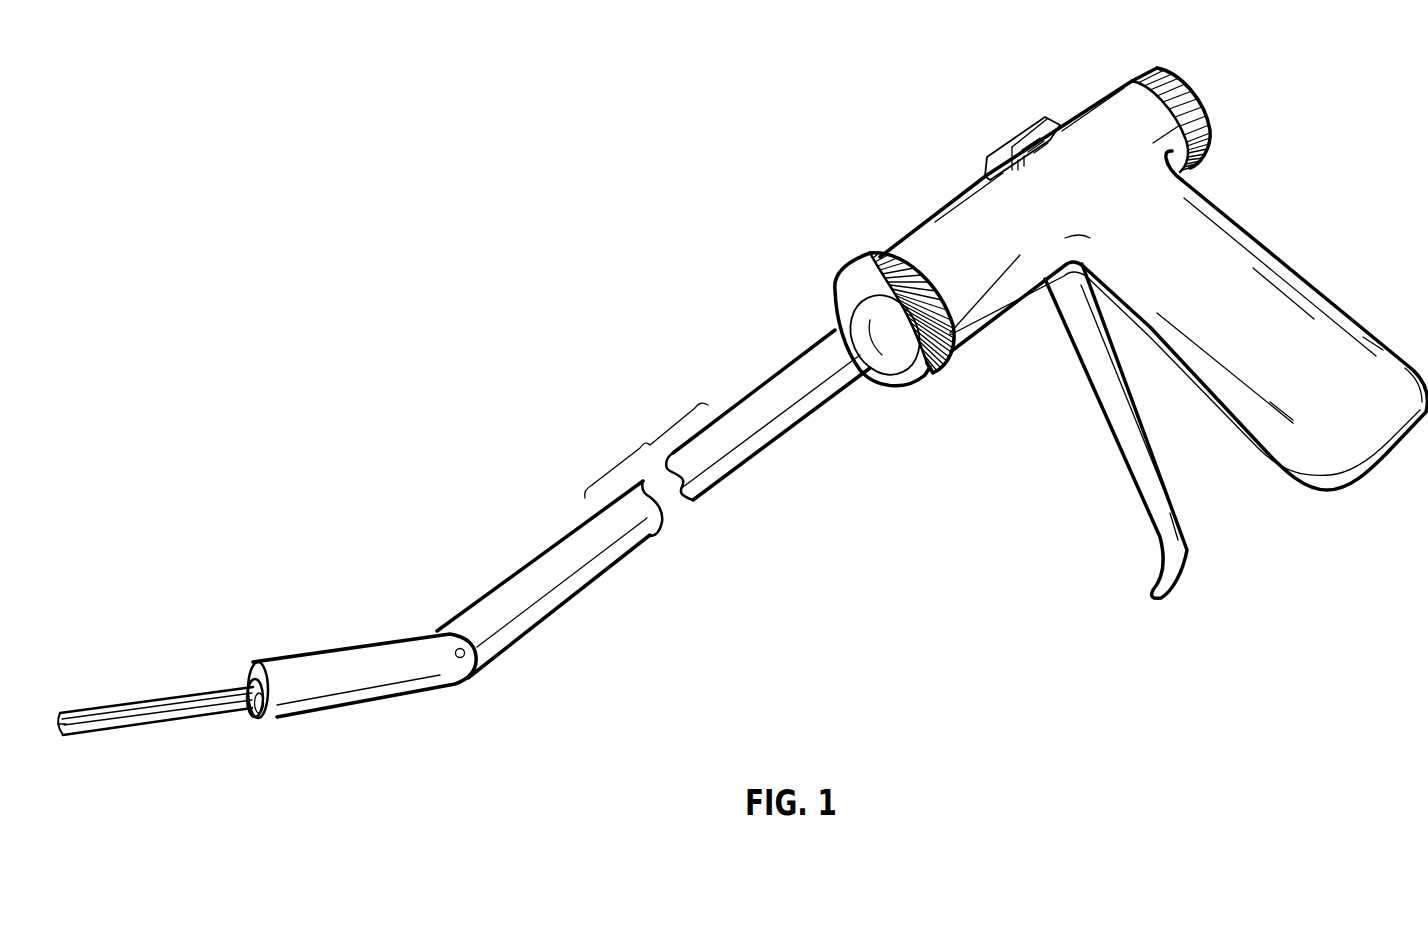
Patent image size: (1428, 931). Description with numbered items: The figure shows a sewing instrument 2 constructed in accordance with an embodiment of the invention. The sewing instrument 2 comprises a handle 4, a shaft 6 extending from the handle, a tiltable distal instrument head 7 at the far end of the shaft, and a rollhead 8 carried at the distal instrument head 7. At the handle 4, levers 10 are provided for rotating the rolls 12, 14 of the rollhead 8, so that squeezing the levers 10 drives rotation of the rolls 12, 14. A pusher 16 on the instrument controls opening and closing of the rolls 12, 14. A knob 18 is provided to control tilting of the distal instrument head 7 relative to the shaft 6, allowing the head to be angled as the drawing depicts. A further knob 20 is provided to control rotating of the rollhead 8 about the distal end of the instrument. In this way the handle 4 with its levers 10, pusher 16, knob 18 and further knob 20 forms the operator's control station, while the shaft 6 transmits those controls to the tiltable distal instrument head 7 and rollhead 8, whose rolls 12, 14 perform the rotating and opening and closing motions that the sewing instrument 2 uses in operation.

The sewing instrument 2 is at (633, 317).
The handle 4 is at (1268, 278).
The shaft 6 is at (752, 448).
The tiltable distal instrument head 7 is at (388, 648).
The rollhead 8 is at (268, 703).
The levers 10 is at (1182, 553).
The roll 12 is at (142, 698).
The roll 14 is at (163, 717).
The pusher 16 is at (1012, 148).
The knob 18 is at (936, 368).
The further knob 20 is at (1213, 132).